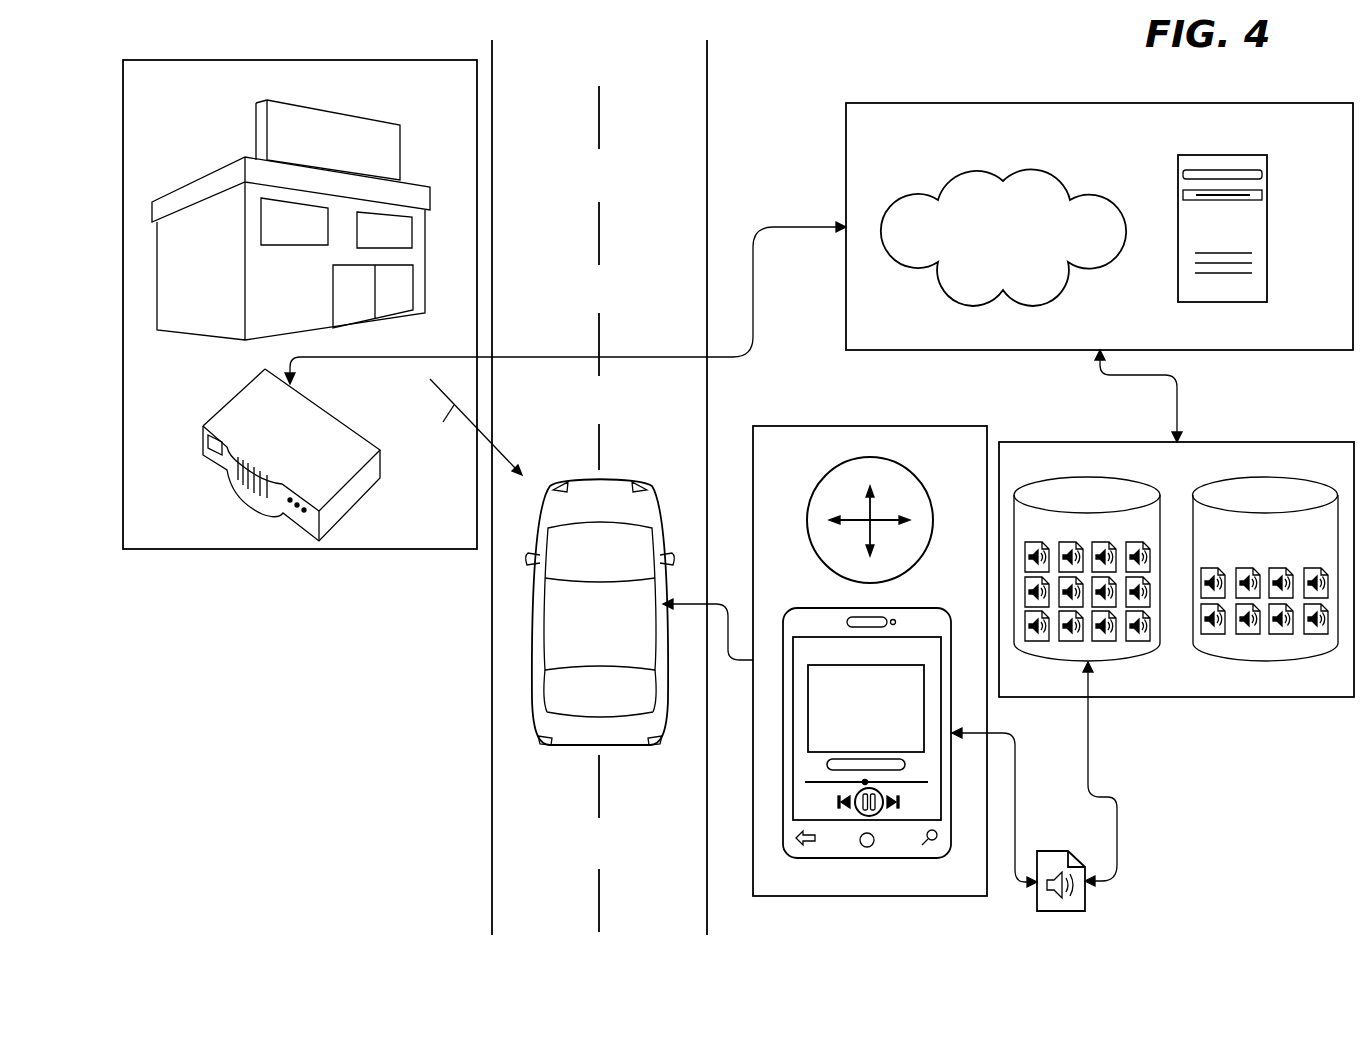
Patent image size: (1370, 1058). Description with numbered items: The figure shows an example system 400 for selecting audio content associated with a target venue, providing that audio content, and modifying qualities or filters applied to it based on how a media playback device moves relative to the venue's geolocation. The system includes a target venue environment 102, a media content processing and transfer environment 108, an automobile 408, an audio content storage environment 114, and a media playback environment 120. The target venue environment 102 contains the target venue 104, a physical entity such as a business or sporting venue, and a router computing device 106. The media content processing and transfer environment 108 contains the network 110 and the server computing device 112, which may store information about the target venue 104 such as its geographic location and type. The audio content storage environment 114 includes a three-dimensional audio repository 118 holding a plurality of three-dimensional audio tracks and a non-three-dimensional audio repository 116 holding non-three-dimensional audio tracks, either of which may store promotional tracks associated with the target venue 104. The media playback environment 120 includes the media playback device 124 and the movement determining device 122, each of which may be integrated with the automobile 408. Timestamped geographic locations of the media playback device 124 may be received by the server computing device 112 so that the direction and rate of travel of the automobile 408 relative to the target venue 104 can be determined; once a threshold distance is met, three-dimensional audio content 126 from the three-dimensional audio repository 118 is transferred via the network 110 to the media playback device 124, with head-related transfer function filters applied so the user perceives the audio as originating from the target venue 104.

The target venue environment 102 is at (123, 549).
The target venue 104 is at (249, 341).
The router computing device 106 is at (203, 458).
The media content processing and transfer environment 108 is at (1353, 350).
The network 110 is at (990, 253).
The server computing device 112 is at (1224, 302).
The audio content storage environment 114 is at (1354, 697).
The non-3D audio repository 116 is at (1226, 655).
The 3D audio repository 118 is at (1061, 659).
The media playback environment 120 is at (987, 426).
The movement determining device 122 is at (925, 483).
The media playback device 124 is at (867, 858).
The 3D audio content 126 is at (1047, 851).
The system 400 is at (1262, 865).
The automobile 408 is at (648, 486).